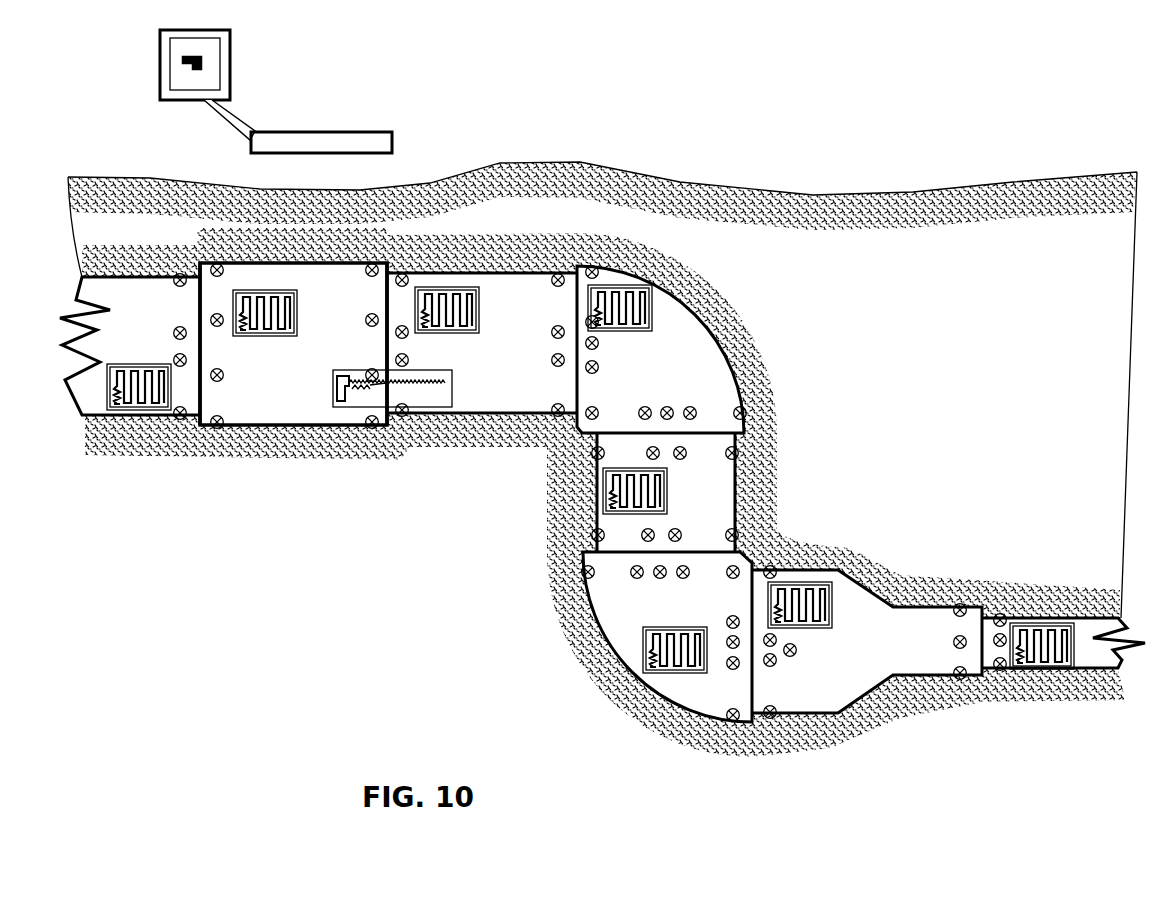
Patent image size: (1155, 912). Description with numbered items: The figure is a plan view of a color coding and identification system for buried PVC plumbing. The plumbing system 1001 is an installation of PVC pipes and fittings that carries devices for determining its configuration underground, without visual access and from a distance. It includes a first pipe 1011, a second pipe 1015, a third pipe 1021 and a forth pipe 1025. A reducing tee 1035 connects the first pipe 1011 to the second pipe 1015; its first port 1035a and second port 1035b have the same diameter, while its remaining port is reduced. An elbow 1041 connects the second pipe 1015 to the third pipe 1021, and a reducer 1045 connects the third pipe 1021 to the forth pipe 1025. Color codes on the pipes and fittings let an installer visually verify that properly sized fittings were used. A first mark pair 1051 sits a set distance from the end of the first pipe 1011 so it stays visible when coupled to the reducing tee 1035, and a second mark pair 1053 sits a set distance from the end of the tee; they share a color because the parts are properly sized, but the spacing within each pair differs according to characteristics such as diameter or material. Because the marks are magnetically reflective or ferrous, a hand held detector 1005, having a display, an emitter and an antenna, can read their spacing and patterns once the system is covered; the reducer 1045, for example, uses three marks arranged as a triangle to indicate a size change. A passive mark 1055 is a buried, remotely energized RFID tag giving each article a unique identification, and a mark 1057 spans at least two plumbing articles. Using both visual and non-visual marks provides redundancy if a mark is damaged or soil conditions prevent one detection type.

The plumbing system 1001 is at (641, 130).
The hand held detector 1005 is at (298, 92).
The first pipe 1011 is at (139, 361).
The second pipe 1015 is at (509, 365).
The third pipe 1021 is at (719, 521).
The forth pipe 1025 is at (1110, 664).
The reducing tee 1035 is at (317, 366).
The first port 1035a is at (203, 472).
The second port 1035b is at (377, 480).
The elbow 1041 is at (681, 370).
The reducer 1045 is at (852, 658).
The first mark pair 1051 is at (164, 335).
The second mark pair 1053 is at (237, 356).
The passive mark 1055 is at (299, 290).
The mark 1057 is at (452, 368).